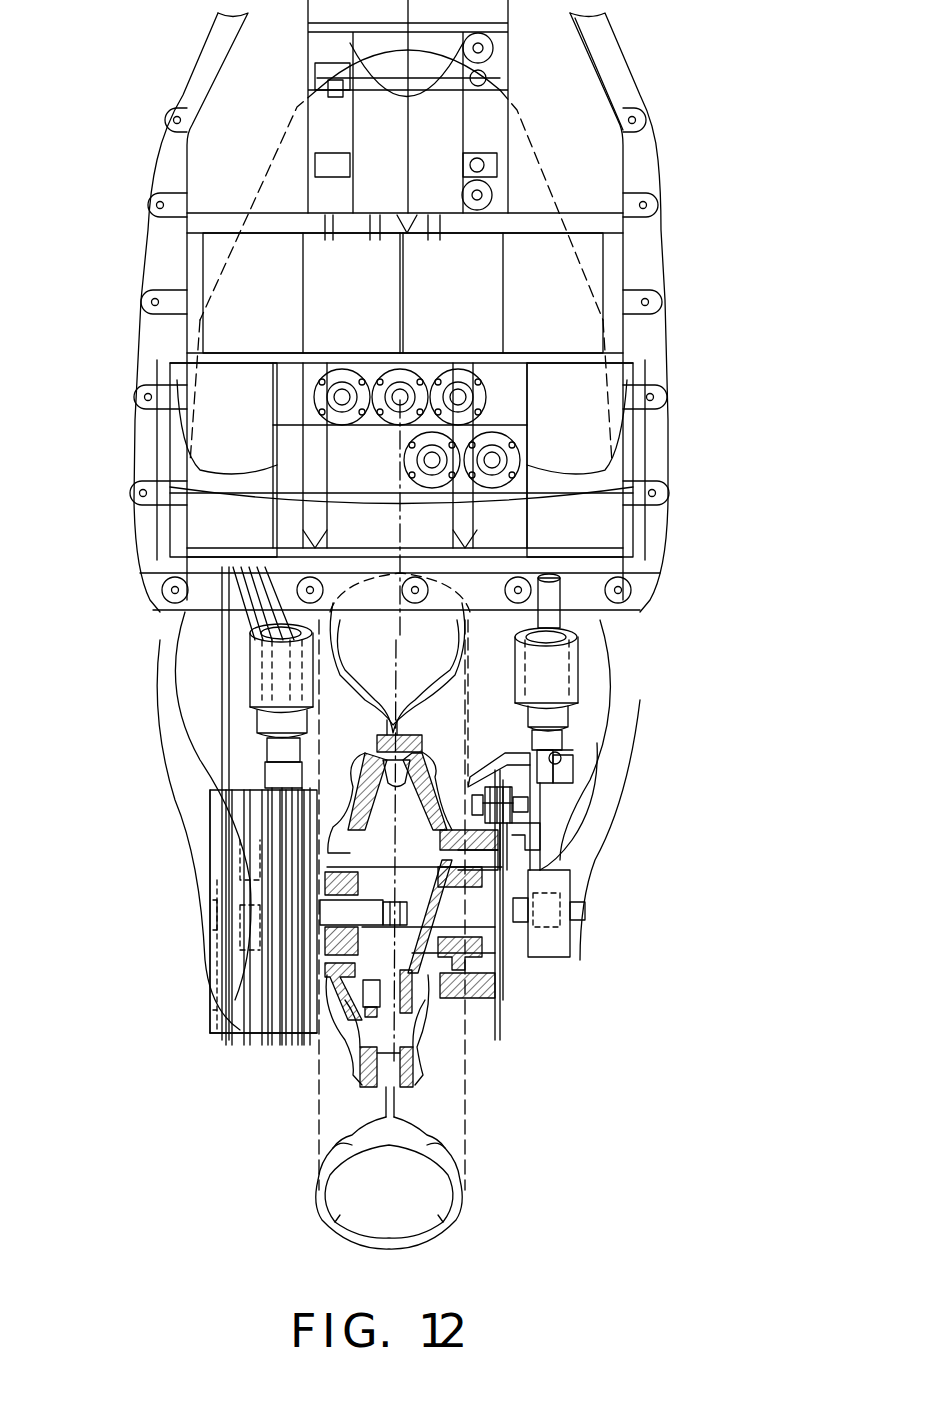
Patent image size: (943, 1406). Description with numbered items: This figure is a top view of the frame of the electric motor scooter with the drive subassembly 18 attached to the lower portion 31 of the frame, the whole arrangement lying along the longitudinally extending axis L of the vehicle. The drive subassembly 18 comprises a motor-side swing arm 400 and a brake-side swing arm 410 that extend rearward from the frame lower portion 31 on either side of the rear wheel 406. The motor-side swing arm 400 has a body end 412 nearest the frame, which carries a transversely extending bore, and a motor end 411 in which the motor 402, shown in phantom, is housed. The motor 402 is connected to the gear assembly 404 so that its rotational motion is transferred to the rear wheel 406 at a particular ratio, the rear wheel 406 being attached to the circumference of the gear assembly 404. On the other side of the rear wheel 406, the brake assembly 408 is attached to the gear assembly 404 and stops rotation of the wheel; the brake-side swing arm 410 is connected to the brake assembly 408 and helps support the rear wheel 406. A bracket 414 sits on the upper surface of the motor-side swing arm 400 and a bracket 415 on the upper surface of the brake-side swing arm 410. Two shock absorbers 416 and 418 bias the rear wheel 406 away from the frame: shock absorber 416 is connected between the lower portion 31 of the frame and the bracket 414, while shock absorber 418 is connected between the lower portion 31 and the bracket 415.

The lower portion of the frame 31 is at (658, 228).
The drive subassembly 18 is at (732, 835).
The longitudinally extending axis L is at (408, 268).
The motor-side swing arm 400 is at (210, 964).
The motor 402 is at (215, 1010).
The gear assembly 404 is at (358, 1082).
The rear wheel 406 is at (462, 1195).
The brake assembly 408 is at (500, 787).
The brake-side swing arm 410 is at (572, 870).
The motor end 411 is at (260, 1056).
The body end 412 is at (212, 592).
The bracket 414 is at (265, 775).
The bracket 415 is at (560, 772).
The shock absorber 416 is at (255, 660).
The shock absorber 418 is at (575, 633).